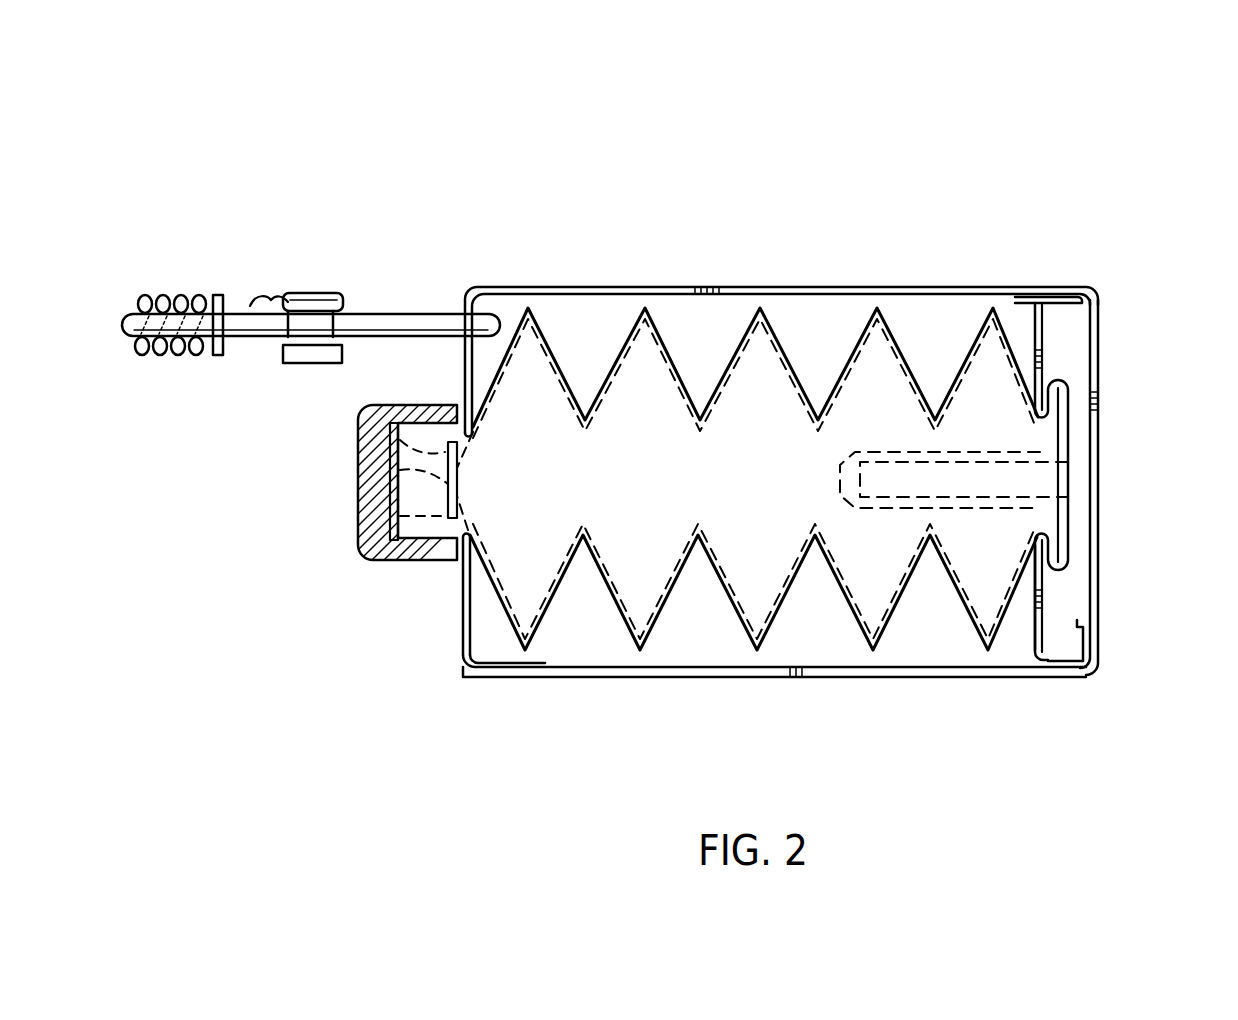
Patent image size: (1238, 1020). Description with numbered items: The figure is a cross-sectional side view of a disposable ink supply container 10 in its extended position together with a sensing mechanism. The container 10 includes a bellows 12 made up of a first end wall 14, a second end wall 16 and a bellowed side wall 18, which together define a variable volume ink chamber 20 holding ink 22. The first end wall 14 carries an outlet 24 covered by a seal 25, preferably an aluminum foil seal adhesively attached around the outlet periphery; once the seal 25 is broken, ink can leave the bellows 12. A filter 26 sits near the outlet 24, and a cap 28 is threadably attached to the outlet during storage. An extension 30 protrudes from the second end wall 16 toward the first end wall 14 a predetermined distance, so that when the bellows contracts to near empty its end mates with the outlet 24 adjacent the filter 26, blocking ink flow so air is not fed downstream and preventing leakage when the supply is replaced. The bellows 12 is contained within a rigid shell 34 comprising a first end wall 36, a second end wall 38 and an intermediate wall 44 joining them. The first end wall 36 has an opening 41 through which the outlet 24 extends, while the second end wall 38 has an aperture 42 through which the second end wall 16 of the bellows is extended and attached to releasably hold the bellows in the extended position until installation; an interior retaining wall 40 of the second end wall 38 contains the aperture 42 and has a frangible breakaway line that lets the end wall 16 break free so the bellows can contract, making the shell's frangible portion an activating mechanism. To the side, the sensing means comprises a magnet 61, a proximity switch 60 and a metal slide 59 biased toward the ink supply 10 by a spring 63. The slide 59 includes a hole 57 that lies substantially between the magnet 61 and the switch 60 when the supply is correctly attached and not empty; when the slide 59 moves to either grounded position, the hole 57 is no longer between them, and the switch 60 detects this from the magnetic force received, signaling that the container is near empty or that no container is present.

The disposable ink supply container 10 is at (503, 117).
The bellows 12 is at (722, 364).
The first end wall 14 is at (400, 560).
The second end wall 16 is at (1060, 446).
The bellowed side wall 18 is at (790, 287).
The variable volume ink chamber 20 is at (656, 400).
The ink 22 is at (527, 362).
The outlet 24 is at (458, 485).
The seal 25 is at (392, 452).
The filter 26 is at (433, 456).
The cap 28 is at (358, 512).
The extension 30 is at (840, 480).
The rigid shell 34 is at (830, 290).
The first end wall 36 is at (468, 652).
The second end wall 38 is at (1103, 347).
The interior retaining wall 40 is at (1050, 618).
The opening 41 is at (463, 548).
The aperture 42 is at (1048, 536).
The intermediate wall 44 is at (1000, 287).
The hole 57 is at (352, 300).
The metal slide 59 is at (420, 313).
The proximity switch 60 is at (300, 293).
The magnet 61 is at (300, 363).
The spring 63 is at (170, 295).